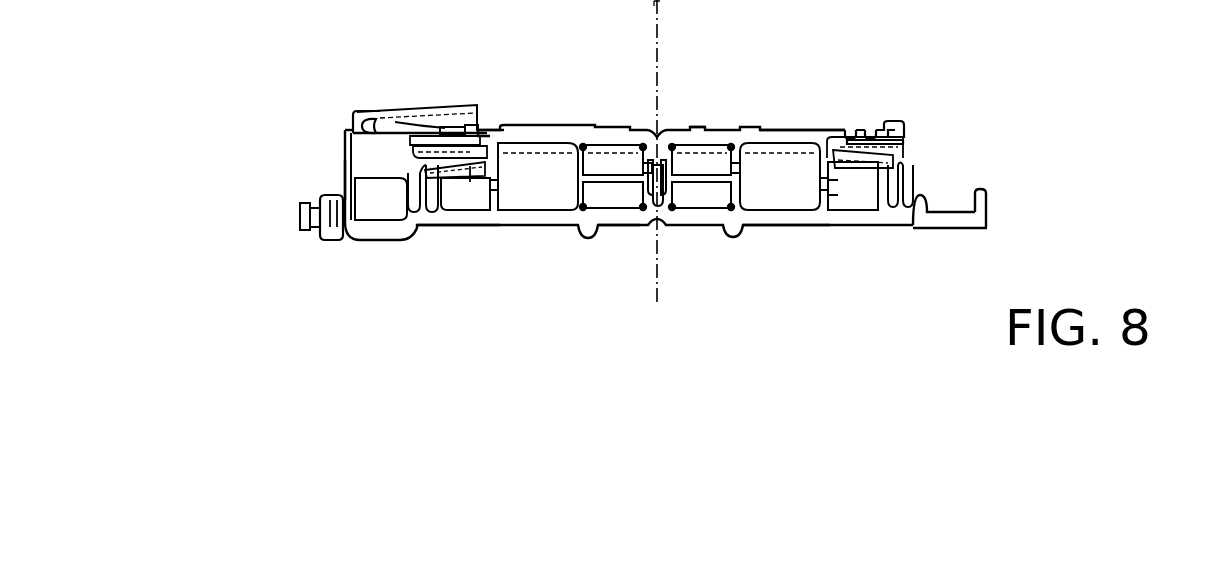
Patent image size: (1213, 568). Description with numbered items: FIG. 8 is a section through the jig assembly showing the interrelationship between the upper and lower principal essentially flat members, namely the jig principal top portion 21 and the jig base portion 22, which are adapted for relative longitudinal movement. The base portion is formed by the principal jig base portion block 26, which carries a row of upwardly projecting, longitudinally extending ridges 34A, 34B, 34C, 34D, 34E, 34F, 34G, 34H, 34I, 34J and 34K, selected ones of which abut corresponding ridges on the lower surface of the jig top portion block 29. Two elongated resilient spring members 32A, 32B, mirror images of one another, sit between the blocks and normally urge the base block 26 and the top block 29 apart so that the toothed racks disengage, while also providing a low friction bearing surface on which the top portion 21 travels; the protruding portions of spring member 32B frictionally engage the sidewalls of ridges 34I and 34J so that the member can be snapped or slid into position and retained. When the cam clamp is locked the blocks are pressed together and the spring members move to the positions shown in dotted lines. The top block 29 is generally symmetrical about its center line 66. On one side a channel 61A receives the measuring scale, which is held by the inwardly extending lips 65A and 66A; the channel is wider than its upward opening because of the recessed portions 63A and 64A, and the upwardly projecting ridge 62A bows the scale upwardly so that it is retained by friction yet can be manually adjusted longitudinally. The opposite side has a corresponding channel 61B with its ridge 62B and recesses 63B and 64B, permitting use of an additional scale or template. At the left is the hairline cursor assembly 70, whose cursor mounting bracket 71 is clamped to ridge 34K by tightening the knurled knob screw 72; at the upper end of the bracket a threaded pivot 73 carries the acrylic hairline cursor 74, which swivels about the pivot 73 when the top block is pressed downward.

The jig principal top portion 21 is at (599, 129).
The jig base portion 22 is at (566, 242).
The principal jig base portion block 26 is at (810, 219).
The jig top portion block 29 is at (722, 131).
The elongated resilient spring member 32A is at (893, 158).
The elongated resilient spring member 32B is at (422, 172).
The upwardly projecting ridge 34A is at (990, 205).
The upwardly projecting ridge 34B is at (840, 213).
The upwardly projecting ridge 34C is at (853, 186).
The upwardly projecting ridge 34D is at (740, 188).
The upwardly projecting ridge 34E is at (670, 188).
The upwardly projecting ridge 34F is at (647, 188).
The upwardly projecting ridge 34G is at (578, 188).
The upwardly projecting ridge 34H is at (490, 215).
The upwardly projecting ridge 34I is at (440, 188).
The upwardly projecting ridge 34J is at (381, 199).
The upwardly projecting ridge 34K is at (331, 241).
The channel 61A is at (476, 126).
The channel 61B is at (850, 128).
The upwardly projecting ridge 62A is at (444, 118).
The upwardly projecting ridge 62B is at (867, 128).
The recessed portion 63A is at (483, 130).
The recessed portion 63B is at (843, 130).
The recessed portion 64A is at (370, 118).
The recessed portion 64B is at (890, 126).
The inwardly extending lip 65A is at (412, 143).
The center line 66 is at (661, 56).
The inwardly extending lip 66A is at (484, 125).
The hairline cursor assembly 70 is at (328, 142).
The cursor mounting bracket 71 is at (344, 178).
The knurled knob screw 72 is at (298, 218).
The threaded pivot 73 is at (353, 128).
The acrylic hairline cursor 74 is at (460, 126).